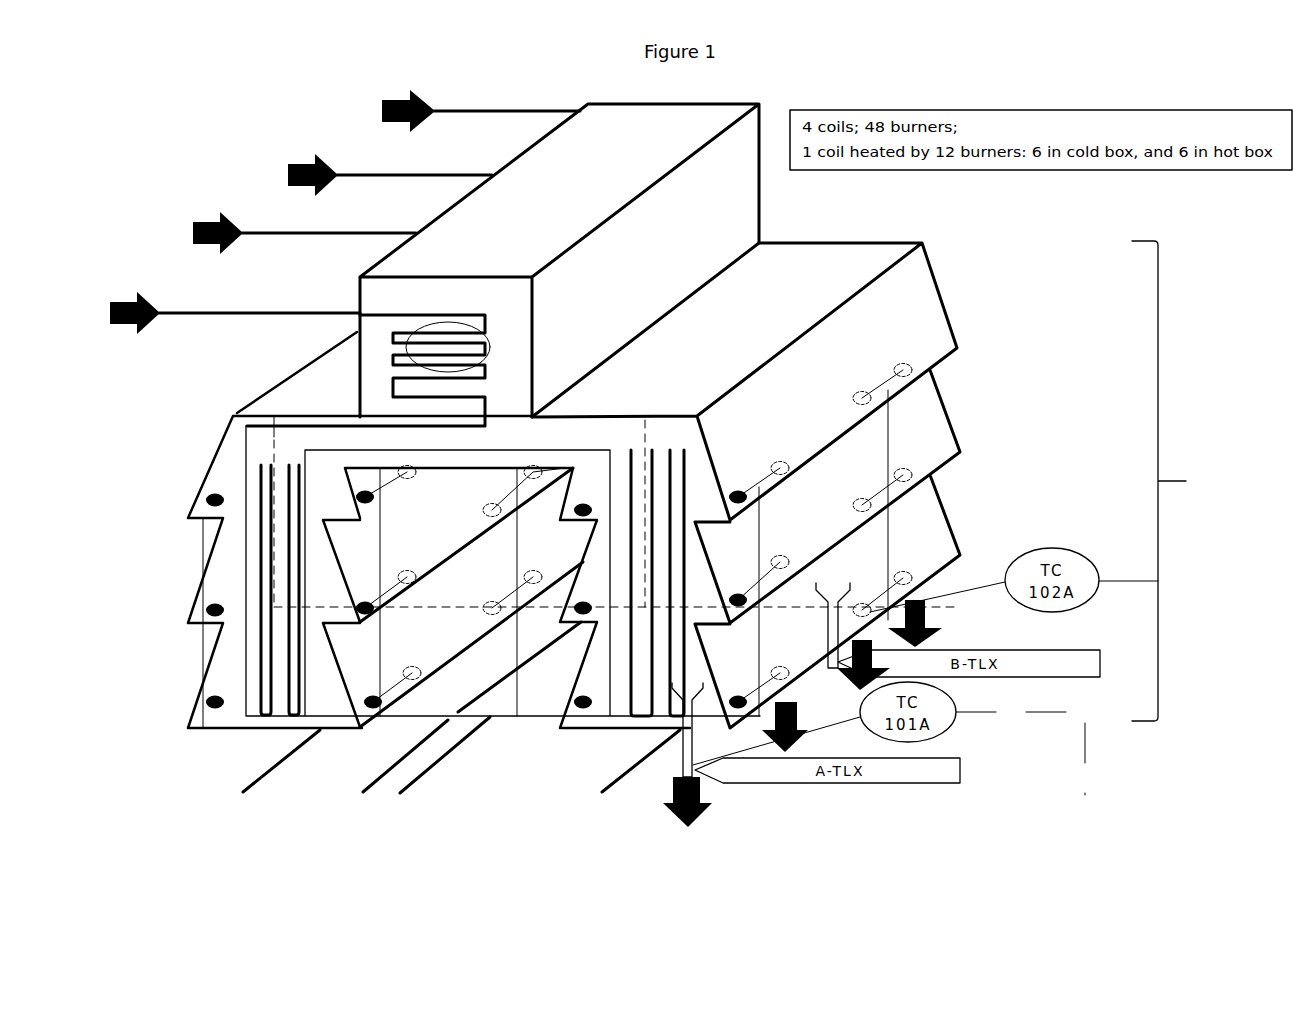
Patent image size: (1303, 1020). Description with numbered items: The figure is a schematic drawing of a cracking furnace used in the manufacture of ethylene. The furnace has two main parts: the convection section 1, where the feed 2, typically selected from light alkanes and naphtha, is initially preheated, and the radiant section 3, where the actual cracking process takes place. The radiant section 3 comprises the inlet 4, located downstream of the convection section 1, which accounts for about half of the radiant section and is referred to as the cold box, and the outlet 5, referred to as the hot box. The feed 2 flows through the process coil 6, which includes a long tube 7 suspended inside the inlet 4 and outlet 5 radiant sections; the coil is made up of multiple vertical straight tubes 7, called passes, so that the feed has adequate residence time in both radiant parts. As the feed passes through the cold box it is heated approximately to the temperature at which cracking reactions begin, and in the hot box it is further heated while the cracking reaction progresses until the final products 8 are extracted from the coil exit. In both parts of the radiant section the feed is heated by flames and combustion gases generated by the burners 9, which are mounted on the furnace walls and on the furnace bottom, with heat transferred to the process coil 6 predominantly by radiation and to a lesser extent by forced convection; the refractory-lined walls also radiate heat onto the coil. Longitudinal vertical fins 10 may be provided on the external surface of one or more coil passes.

The convection section 1 is at (559, 260).
The feed 2 is at (329, 212).
The radiant section 3 is at (1179, 481).
The inlet radiant section 4 is at (360, 530).
The outlet radiant section 5 is at (746, 485).
The process coil 6 is at (324, 356).
The vertical straight tubes 7 is at (285, 543).
The final products 8 is at (300, 716).
The burners 9 is at (687, 772).
The longitudinal vertical fins 10 is at (912, 372).